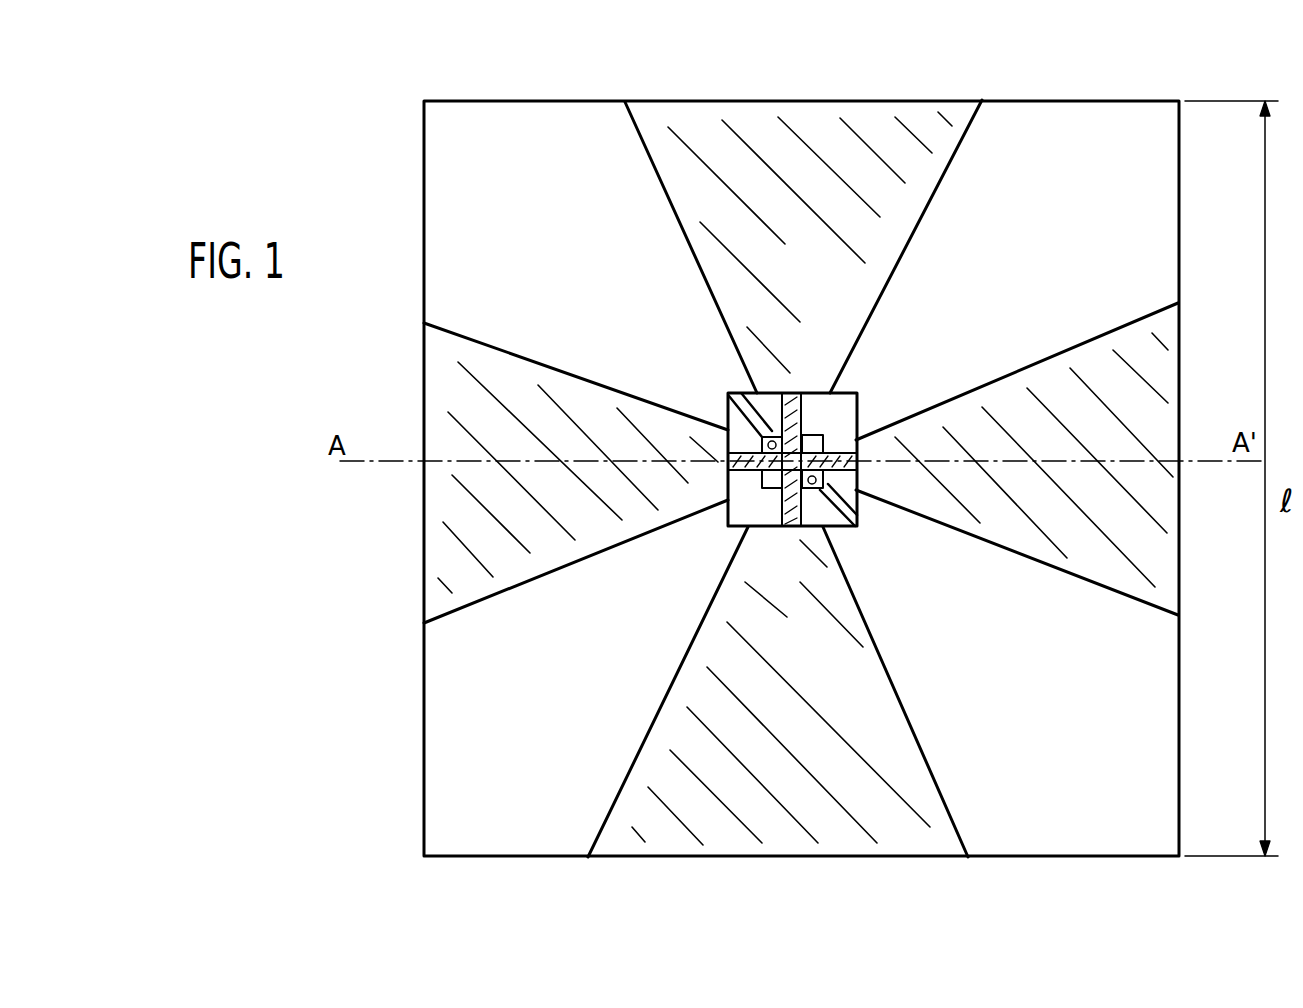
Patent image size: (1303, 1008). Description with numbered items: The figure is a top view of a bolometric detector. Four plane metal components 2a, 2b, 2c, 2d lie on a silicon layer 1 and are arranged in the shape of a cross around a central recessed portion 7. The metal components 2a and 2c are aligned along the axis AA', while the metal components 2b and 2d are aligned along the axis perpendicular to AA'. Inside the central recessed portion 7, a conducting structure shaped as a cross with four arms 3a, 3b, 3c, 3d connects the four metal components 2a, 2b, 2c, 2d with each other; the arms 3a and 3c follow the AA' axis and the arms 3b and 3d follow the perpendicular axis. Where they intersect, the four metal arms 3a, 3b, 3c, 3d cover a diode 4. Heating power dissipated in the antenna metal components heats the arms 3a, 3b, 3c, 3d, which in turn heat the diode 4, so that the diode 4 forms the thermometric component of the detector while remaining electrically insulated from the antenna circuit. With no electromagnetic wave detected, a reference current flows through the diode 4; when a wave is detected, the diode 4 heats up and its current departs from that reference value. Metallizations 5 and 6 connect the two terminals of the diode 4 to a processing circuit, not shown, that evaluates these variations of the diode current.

The silicon layer 1 is at (437, 773).
The plane metal component 2a is at (437, 548).
The plane metal component 2b is at (713, 116).
The plane metal component 2c is at (1165, 570).
The plane metal component 2d is at (748, 830).
The arm 3a is at (727, 464).
The arm 3b is at (795, 395).
The arm 3c is at (860, 463).
The arm 3d is at (777, 527).
The diode 4 is at (762, 480).
The metallization 5 is at (745, 393).
The metallization 6 is at (833, 527).
The central recessed portion 7 is at (847, 410).